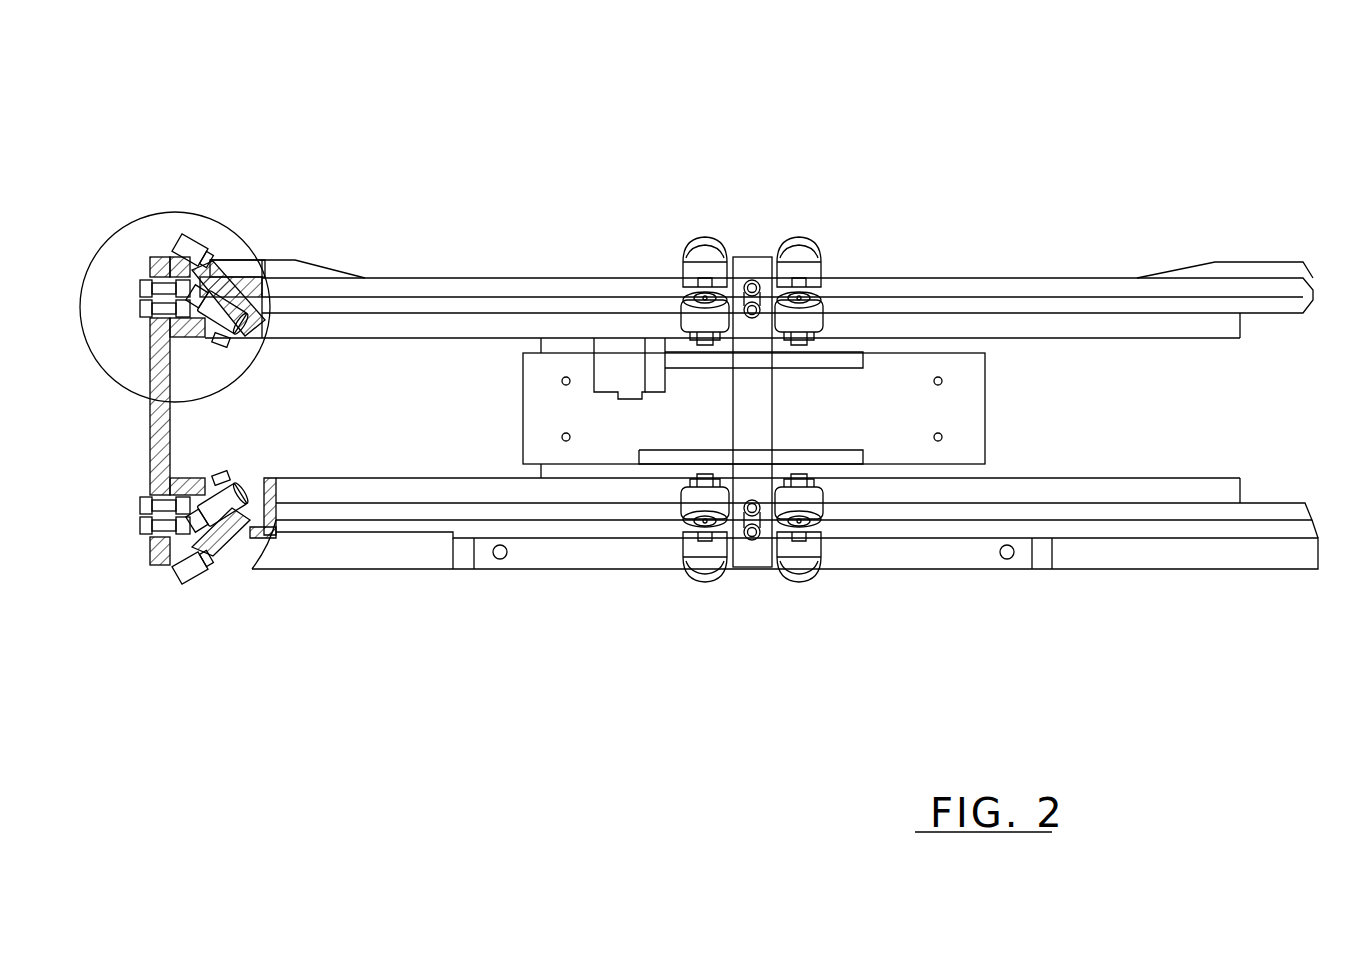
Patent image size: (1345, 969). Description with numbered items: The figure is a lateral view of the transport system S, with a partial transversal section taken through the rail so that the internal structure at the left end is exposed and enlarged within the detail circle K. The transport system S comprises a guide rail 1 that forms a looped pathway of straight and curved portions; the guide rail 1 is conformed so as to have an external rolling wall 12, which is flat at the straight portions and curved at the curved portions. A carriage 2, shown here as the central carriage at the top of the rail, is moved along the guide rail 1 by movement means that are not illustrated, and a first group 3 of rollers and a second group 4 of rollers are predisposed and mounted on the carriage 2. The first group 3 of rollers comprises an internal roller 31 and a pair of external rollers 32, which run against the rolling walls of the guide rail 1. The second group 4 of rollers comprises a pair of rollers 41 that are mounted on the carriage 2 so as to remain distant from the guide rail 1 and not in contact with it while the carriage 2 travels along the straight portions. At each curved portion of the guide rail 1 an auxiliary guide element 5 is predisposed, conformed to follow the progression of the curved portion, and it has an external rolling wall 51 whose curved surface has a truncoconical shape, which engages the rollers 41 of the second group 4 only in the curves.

The transport system S is at (516, 220).
The detail region K is at (206, 216).
The guide rail 1 is at (975, 268).
The external rolling wall 12 is at (912, 307).
The carriage 2 is at (784, 242).
The first group of rollers 3 is at (722, 334).
The internal roller 31 is at (246, 305).
The external rollers 32 is at (682, 325).
The second group of rollers 4 is at (776, 235).
The rollers 41 is at (165, 245).
The auxiliary guide element 5 is at (1240, 253).
The external rolling wall 51 is at (1288, 270).